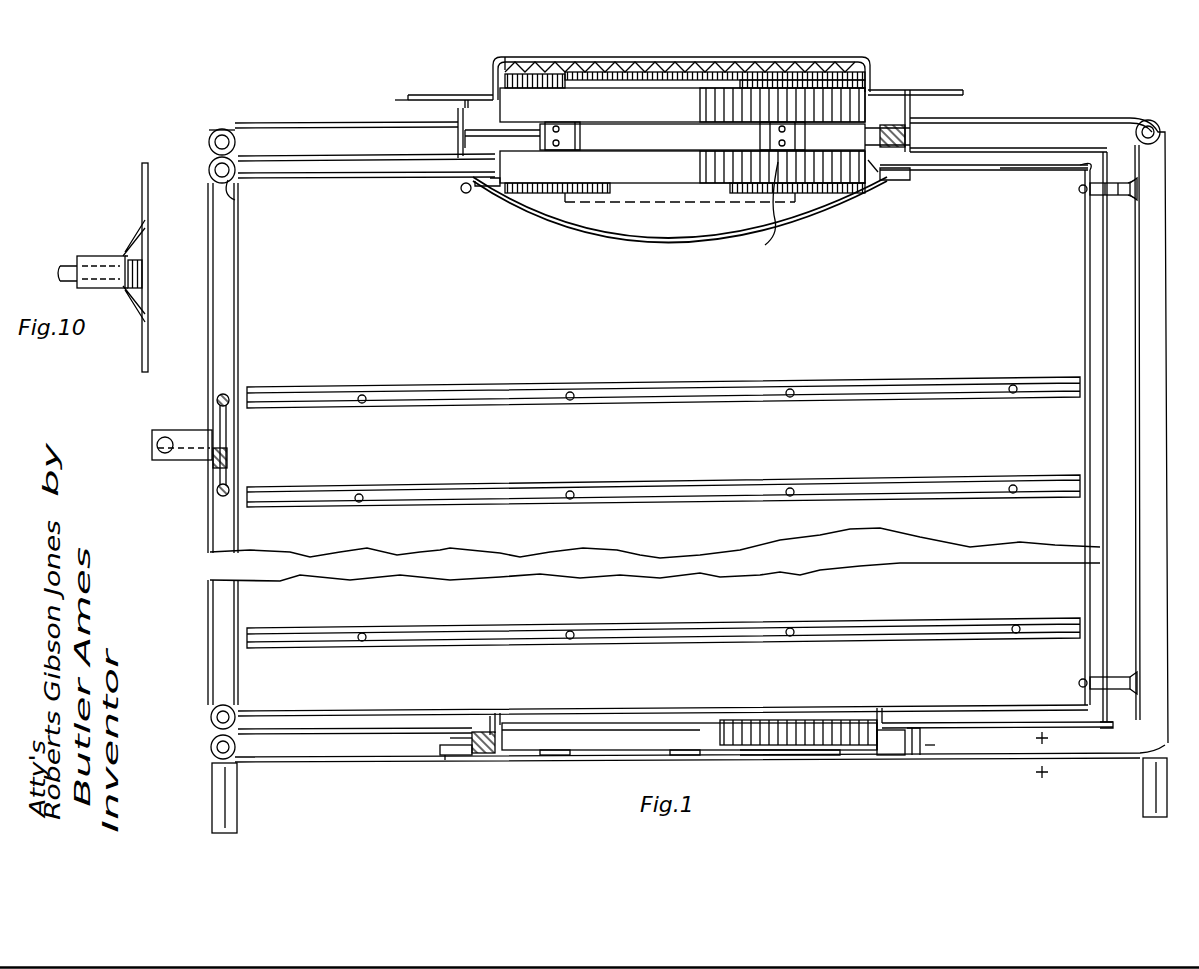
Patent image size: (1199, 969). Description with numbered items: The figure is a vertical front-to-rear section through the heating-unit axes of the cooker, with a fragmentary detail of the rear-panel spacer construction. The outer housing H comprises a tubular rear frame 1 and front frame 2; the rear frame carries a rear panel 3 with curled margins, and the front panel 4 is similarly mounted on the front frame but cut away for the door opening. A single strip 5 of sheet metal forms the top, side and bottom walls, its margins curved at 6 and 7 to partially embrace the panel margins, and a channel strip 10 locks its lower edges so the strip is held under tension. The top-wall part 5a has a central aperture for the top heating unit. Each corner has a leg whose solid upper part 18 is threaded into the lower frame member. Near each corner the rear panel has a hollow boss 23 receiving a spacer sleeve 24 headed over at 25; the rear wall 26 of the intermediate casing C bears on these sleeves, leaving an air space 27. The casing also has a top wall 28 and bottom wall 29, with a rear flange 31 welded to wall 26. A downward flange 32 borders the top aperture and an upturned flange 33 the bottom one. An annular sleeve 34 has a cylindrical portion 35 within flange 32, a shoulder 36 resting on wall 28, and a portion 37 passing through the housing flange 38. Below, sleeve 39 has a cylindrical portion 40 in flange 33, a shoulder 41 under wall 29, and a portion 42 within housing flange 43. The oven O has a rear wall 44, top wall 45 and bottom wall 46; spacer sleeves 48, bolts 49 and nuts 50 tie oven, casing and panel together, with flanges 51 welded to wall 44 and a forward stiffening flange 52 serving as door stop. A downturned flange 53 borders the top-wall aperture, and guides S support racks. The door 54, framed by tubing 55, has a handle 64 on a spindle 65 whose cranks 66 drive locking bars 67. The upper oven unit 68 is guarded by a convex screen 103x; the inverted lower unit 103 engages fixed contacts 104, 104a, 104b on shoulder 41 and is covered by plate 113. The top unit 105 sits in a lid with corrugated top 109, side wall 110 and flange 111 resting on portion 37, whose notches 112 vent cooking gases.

In FIG. 1, the rear frame 1 is at (1136, 130).
In FIG. 1, the front frame 2 is at (208, 142).
In FIG. 10, the rear panel 3 is at (147, 348).
In FIG. 1, the rear panel 3 is at (1140, 630).
In FIG. 1, the front panel 4 is at (240, 722).
In FIG. 1, the strip of sheet metal 5 is at (345, 762).
In FIG. 1, the top wall part of strip 5a is at (325, 123).
In FIG. 1, the curved front margin 6 is at (220, 128).
In FIG. 1, the curved rear margin 7 is at (1155, 122).
In FIG. 1, the channel strip 10 is at (1054, 765).
In FIG. 1, the upper part of leg 18 is at (1145, 780).
In FIG. 10, the hollow boss 23 is at (148, 298).
In FIG. 1, the hollow boss 23 is at (1130, 196).
In FIG. 10, the spacer sleeve 24 is at (92, 258).
In FIG. 1, the spacer sleeve 24 is at (1105, 196).
In FIG. 10, the headed-over end 25 is at (127, 252).
In FIG. 1, the rear wall of casing 26 is at (1103, 340).
In FIG. 1, the air space 27 is at (1118, 460).
In FIG. 1, the top wall of casing 28 is at (1030, 148).
In FIG. 1, the bottom wall of casing 29 is at (995, 725).
In FIG. 1, the flange 31 is at (1104, 148).
In FIG. 1, the downwardly directed annular flange 32 is at (430, 176).
In FIG. 1, the upturned annular flange 33 is at (488, 716).
In FIG. 1, the annular support sleeve 34 is at (450, 143).
In FIG. 1, the cylindrical portion 35 is at (920, 184).
In FIG. 1, the horizontal shoulder 36 is at (900, 124).
In FIG. 1, the cylindrical portion 37 is at (918, 128).
In FIG. 1, the upstanding annular flange 38 is at (950, 96).
In FIG. 1, the supporting sleeve 39 is at (943, 740).
In FIG. 1, the cylindrical portion 40 is at (505, 725).
In FIG. 1, the horizontal shoulder portion 41 is at (445, 745).
In FIG. 1, the downwardly directed cylindrical portion 42 is at (465, 762).
In FIG. 1, the upturned annular flange 43 is at (440, 765).
In FIG. 1, the rear wall of oven 44 is at (1085, 290).
In FIG. 1, the top wall of oven 45 is at (995, 172).
In FIG. 1, the bottom wall of oven 46 is at (945, 698).
In FIG. 1, the spacer sleeve 48 is at (1092, 196).
In FIG. 10, the bolt 49 is at (68, 268).
In FIG. 1, the bolt 49 is at (1080, 190).
In FIG. 10, the nut 50 is at (142, 272).
In FIG. 1, the flange 51 is at (1078, 170).
In FIG. 1, the stiffening flange 52 is at (209, 172).
In FIG. 1, the downturned annular flange 53 is at (880, 186).
In FIG. 1, the oven door 54 is at (205, 510).
In FIG. 1, the metal tubing 55 is at (237, 202).
In FIG. 1, the handle 64 is at (160, 440).
In FIG. 1, the rotatable spindle 65 is at (178, 432).
In FIG. 1, the crank member 66 is at (228, 415).
In FIG. 1, the locking bar 67 is at (225, 394).
In FIG. 1, the upper oven unit 68 is at (780, 211).
In FIG. 1, the lower oven unit 103 is at (805, 720).
In FIG. 1, the guard screen 103x is at (678, 242).
In FIG. 1, the fixed contact blade 104 is at (525, 752).
In FIG. 1, the fixed contact blade 104a is at (660, 752).
In FIG. 1, the fixed contact blade 104b is at (878, 752).
In FIG. 1, the top heating unit 105 is at (866, 68).
In FIG. 1, the top member 109 is at (505, 56).
In FIG. 1, the cylindrical side wall 110 is at (490, 90).
In FIG. 1, the horizontal flange 111 is at (412, 97).
In FIG. 1, the notch 112 is at (460, 102).
In FIG. 1, the plate 113 is at (748, 760).
In FIG. 1, the outer shell or housing H is at (1145, 245).
In FIG. 1, the intermediate shell or casing C is at (1120, 300).
In FIG. 1, the oven O is at (1095, 445).
In FIG. 1, the guide S is at (958, 384).